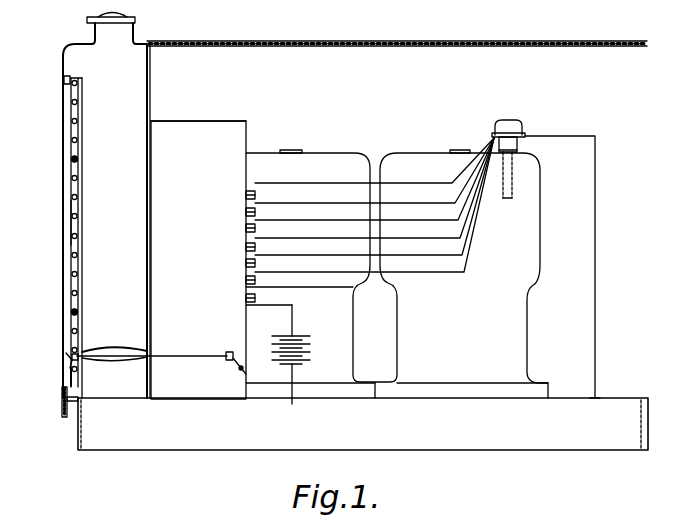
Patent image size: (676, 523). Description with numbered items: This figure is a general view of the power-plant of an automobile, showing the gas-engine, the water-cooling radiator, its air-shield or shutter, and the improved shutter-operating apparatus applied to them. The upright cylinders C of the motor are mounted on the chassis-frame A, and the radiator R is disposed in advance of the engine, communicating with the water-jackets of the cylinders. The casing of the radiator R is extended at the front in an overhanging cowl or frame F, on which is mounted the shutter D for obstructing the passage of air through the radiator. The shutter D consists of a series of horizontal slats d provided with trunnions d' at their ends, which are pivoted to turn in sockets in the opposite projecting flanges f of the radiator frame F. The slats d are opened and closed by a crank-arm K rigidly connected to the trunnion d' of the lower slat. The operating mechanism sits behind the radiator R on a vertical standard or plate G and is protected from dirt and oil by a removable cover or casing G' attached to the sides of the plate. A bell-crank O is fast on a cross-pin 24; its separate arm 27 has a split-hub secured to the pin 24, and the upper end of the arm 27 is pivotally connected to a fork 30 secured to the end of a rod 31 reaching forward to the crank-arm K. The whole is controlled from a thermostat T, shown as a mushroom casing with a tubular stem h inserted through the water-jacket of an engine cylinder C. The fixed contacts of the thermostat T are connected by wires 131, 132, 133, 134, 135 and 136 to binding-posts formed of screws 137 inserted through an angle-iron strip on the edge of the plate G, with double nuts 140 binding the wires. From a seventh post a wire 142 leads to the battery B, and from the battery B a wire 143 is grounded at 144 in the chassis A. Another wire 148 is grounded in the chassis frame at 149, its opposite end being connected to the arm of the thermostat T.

The radiator R is at (106, 206).
The shutter D is at (71, 158).
The cowl or frame F is at (64, 80).
The horizontal slats d is at (56, 226).
The trunnions d' is at (91, 232).
The projecting flanges f is at (69, 222).
The rod 31 is at (149, 350).
The fork 30 is at (227, 348).
The bell-crank arm 27 is at (236, 365).
The cross-pin 24 is at (232, 381).
The crank-arm K is at (68, 362).
The removable cover or casing G' is at (198, 260).
The plate G is at (210, 131).
The wire 136 is at (370, 168).
The wire 135 is at (370, 177).
The wire 134 is at (370, 185).
The wire 133 is at (370, 194).
The wire 132 is at (370, 202).
The wire 131 is at (370, 211).
The screws 137 is at (255, 297).
The bell-crank O is at (310, 373).
The double nuts 140 is at (269, 314).
The wire 142 is at (292, 320).
The battery B is at (300, 350).
The wire 143 is at (292, 371).
The ground 144 is at (292, 398).
The cylinders C is at (337, 158).
The thermostat T is at (522, 130).
The terminal rod h is at (512, 188).
The wire 148 is at (595, 304).
The ground 149 is at (597, 397).
The chassis-frame A is at (403, 432).